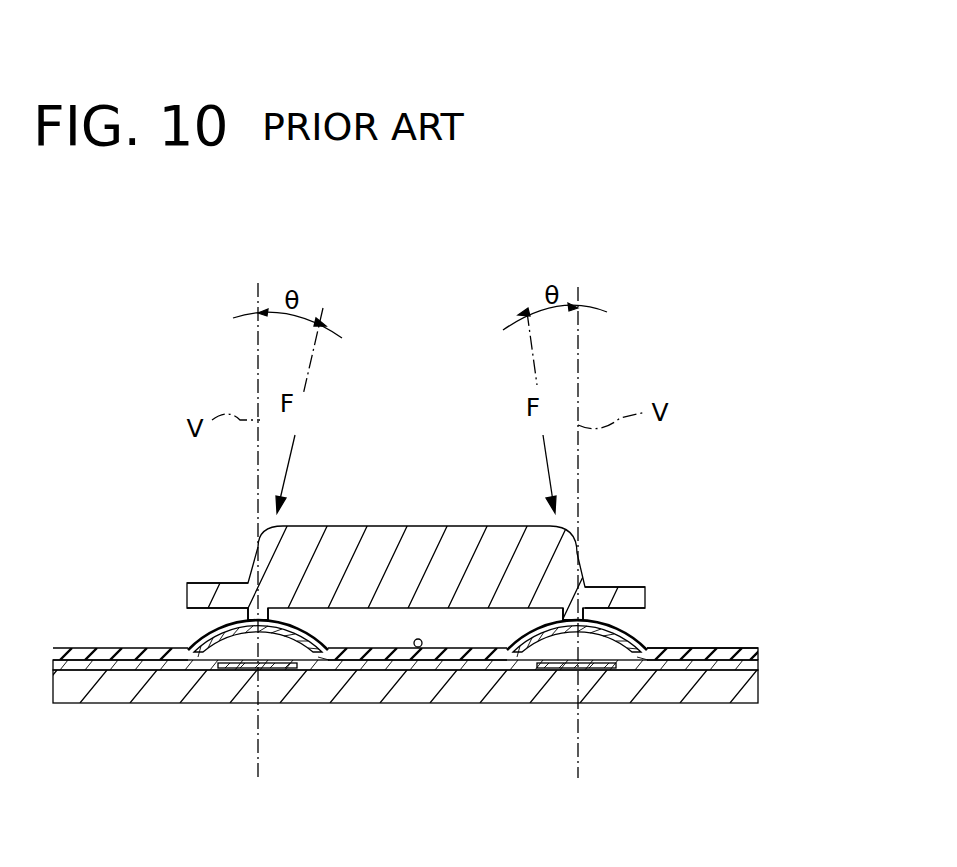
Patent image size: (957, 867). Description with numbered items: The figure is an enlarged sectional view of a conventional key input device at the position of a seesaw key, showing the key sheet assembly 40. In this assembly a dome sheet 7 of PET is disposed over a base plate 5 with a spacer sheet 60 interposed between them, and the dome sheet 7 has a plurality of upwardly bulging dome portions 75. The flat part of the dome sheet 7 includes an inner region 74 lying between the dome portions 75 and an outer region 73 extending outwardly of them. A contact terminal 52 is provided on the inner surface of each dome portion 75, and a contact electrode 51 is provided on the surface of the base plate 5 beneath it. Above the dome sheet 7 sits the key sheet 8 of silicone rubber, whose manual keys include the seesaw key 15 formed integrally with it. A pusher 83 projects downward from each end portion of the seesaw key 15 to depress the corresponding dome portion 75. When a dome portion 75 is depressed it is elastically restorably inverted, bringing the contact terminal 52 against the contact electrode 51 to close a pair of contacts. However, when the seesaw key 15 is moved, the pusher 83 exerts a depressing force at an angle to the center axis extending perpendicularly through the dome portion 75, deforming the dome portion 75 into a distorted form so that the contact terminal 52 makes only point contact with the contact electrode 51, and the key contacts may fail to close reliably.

The base plate 5 is at (697, 703).
The spacer sheet 60 is at (758, 665).
The outer region 73 is at (103, 648).
The dome sheet 7 is at (740, 648).
The contact electrode 51 is at (243, 662).
The contact terminal 52 is at (222, 641).
The dome portion 75 is at (205, 635).
The inner region 74 is at (416, 647).
The seesaw key 15 is at (428, 526).
The key sheet 8 is at (612, 587).
The pusher 83 is at (252, 616).
The key sheet assembly 40 is at (690, 572).